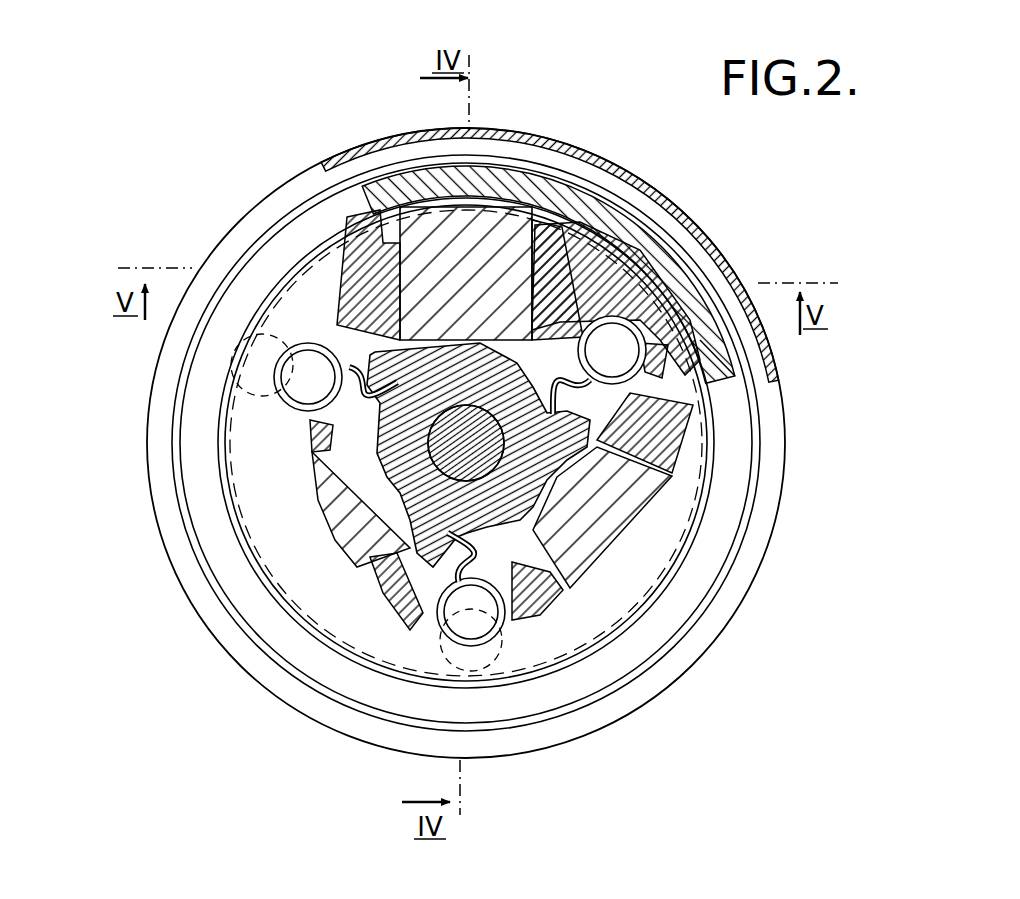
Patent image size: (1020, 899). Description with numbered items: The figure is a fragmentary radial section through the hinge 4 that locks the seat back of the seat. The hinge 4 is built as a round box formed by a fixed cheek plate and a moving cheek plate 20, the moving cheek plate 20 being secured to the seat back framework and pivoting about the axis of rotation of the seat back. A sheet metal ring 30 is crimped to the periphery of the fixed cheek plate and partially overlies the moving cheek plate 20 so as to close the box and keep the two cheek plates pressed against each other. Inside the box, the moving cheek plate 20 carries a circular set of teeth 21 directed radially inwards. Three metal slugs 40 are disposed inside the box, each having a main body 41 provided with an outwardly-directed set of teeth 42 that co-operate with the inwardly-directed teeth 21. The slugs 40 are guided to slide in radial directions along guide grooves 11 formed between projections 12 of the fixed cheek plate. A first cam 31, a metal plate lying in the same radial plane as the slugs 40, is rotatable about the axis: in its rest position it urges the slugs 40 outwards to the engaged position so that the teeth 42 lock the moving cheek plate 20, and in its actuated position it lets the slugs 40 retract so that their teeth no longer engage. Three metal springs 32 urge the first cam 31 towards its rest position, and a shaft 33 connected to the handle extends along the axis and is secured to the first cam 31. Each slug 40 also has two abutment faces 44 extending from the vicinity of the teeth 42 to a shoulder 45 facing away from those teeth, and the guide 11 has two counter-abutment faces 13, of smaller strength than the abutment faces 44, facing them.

The hinge 4 is at (255, 188).
The guide grooves 11 is at (337, 320).
The projections 12 is at (613, 297).
The counter-abutment faces 13 is at (368, 222).
The moving cheek plate 20 is at (680, 297).
The set of teeth 21 is at (700, 340).
The sheet metal ring 30 is at (568, 235).
The first cam 31 is at (420, 487).
The metal springs 32 is at (632, 386).
The shaft 33 is at (570, 480).
The metal slugs 40 is at (478, 185).
The main body 41 is at (497, 287).
The outwardly-directed set of teeth 42 is at (505, 190).
The abutment faces 44 is at (392, 210).
The shoulder 45 is at (396, 240).